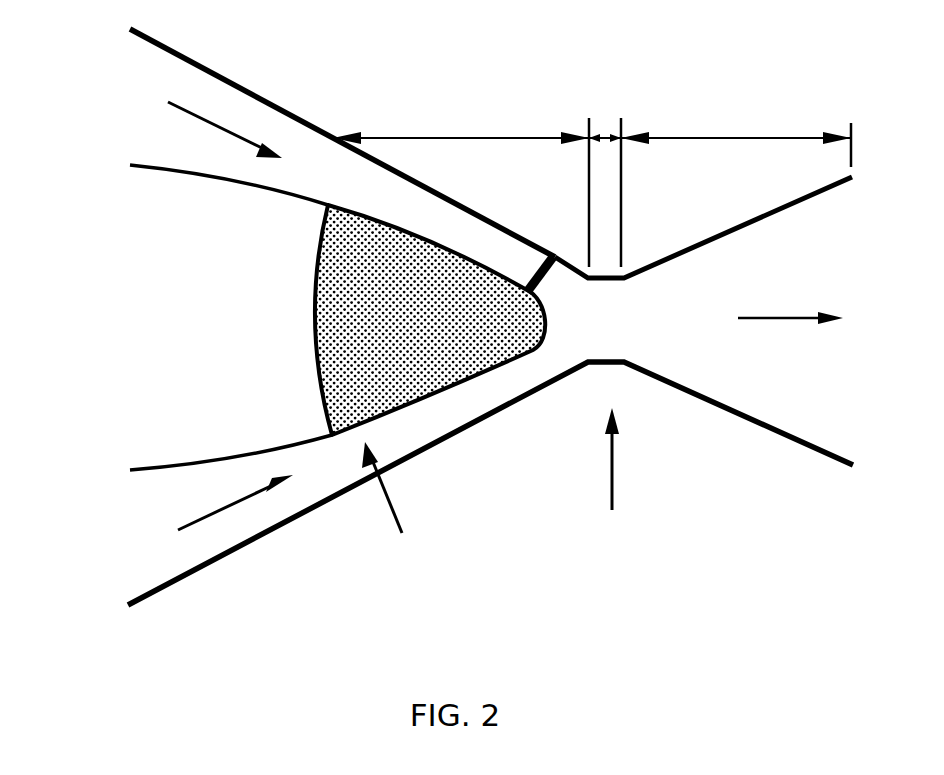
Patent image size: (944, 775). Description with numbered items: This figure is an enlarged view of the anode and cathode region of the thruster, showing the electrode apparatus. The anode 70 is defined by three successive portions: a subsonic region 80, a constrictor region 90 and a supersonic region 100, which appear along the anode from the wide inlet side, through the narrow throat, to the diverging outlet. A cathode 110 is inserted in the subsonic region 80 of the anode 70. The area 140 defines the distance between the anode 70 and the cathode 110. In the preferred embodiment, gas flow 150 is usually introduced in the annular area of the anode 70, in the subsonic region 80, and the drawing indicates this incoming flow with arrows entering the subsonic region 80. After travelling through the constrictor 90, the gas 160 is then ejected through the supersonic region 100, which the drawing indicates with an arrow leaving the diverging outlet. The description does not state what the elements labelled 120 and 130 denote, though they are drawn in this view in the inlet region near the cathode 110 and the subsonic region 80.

The anode 70 is at (612, 480).
The subsonic region 80 is at (515, 138).
The constrictor region 90 is at (587, 138).
The supersonic region 100 is at (727, 138).
The cathode 110 is at (396, 509).
The inner channel wall 120 is at (133, 470).
The shaded insert body 130 is at (450, 392).
The area 140 is at (543, 278).
The gas flow 150 is at (190, 113).
The gas 160 is at (773, 317).